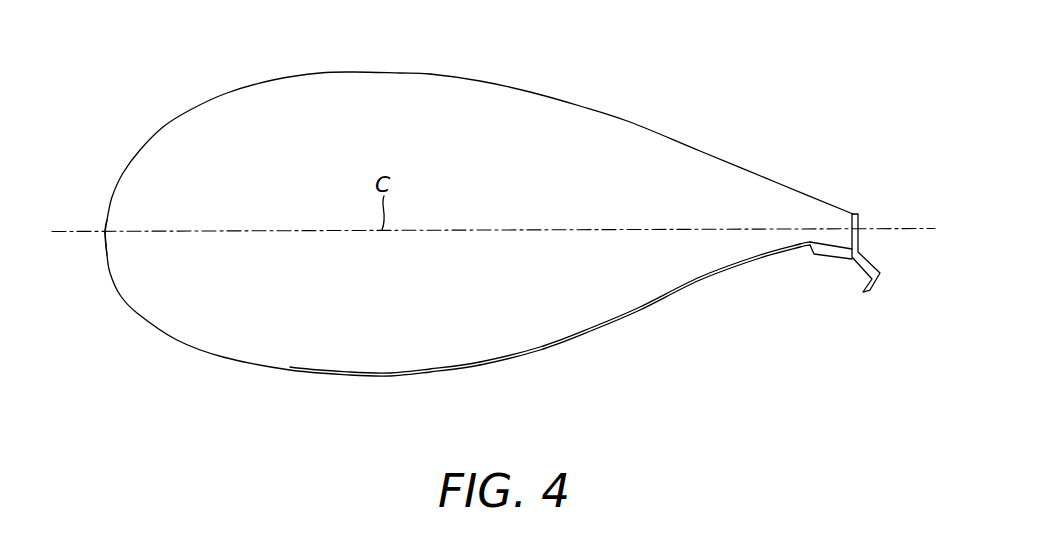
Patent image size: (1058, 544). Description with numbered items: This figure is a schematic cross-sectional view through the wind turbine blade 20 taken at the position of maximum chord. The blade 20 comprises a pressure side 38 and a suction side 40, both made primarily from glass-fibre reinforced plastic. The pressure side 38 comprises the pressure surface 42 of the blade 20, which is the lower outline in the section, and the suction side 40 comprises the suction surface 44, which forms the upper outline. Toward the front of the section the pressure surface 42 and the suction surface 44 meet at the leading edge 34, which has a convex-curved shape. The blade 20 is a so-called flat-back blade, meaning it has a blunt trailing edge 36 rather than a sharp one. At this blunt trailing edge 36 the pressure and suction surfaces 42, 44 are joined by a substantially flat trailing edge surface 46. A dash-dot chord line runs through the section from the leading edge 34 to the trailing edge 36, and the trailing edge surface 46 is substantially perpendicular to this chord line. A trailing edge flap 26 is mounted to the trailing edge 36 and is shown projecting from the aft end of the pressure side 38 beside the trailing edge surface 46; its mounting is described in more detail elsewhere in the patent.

The blade 20 is at (169, 348).
The trailing edge flap 26 is at (834, 281).
The leading edge 34 is at (81, 238).
The trailing edge 36 is at (880, 249).
The pressure side 38 is at (422, 397).
The suction side 40 is at (684, 120).
The pressure surface 42 is at (543, 352).
The suction surface 44 is at (353, 71).
The trailing edge surface 46 is at (856, 213).